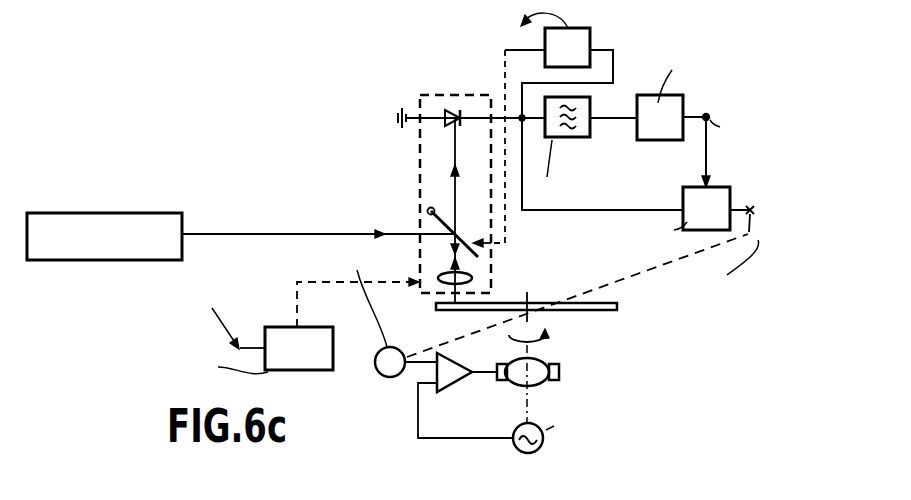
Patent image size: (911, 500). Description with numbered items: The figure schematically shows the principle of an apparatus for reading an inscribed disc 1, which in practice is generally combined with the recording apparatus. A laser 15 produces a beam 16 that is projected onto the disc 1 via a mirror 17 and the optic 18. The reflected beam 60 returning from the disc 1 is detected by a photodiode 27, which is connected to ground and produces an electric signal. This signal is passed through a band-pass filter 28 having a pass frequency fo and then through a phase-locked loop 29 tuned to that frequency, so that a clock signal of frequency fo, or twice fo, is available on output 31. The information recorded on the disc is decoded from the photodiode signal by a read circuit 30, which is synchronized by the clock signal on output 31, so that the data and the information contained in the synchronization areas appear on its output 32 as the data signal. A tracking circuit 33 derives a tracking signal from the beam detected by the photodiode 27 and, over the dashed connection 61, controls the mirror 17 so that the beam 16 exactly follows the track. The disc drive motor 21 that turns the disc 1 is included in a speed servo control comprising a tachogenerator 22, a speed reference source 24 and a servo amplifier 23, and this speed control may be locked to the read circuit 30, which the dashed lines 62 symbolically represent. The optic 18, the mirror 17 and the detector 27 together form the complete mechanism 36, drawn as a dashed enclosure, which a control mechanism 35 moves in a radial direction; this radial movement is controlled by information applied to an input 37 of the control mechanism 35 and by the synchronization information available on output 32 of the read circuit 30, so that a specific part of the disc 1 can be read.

The disc 1 is at (607, 311).
The laser 15 is at (161, 222).
The beam 16 is at (239, 233).
The mirror 17 is at (467, 234).
The optic 18 is at (448, 266).
The disc drive motor 21 is at (541, 386).
The tachogenerator 22 is at (515, 428).
The servo amplifier 23 is at (456, 379).
The reference source 24 is at (387, 377).
The photodiode 27 is at (446, 125).
The band-pass filter 28 is at (573, 139).
The phase-locked loop 29 is at (657, 141).
The read circuit 30 is at (683, 200).
The output 31 is at (705, 115).
The output 32 is at (749, 213).
The tracking circuit 33 is at (592, 33).
The control mechanism 35 is at (320, 337).
The complete mechanism 36 is at (424, 95).
The input 37 is at (171, 318).
The reflected beam 60 is at (455, 193).
The tracking control connection 61 is at (505, 65).
The dashed lines 62 is at (643, 266).